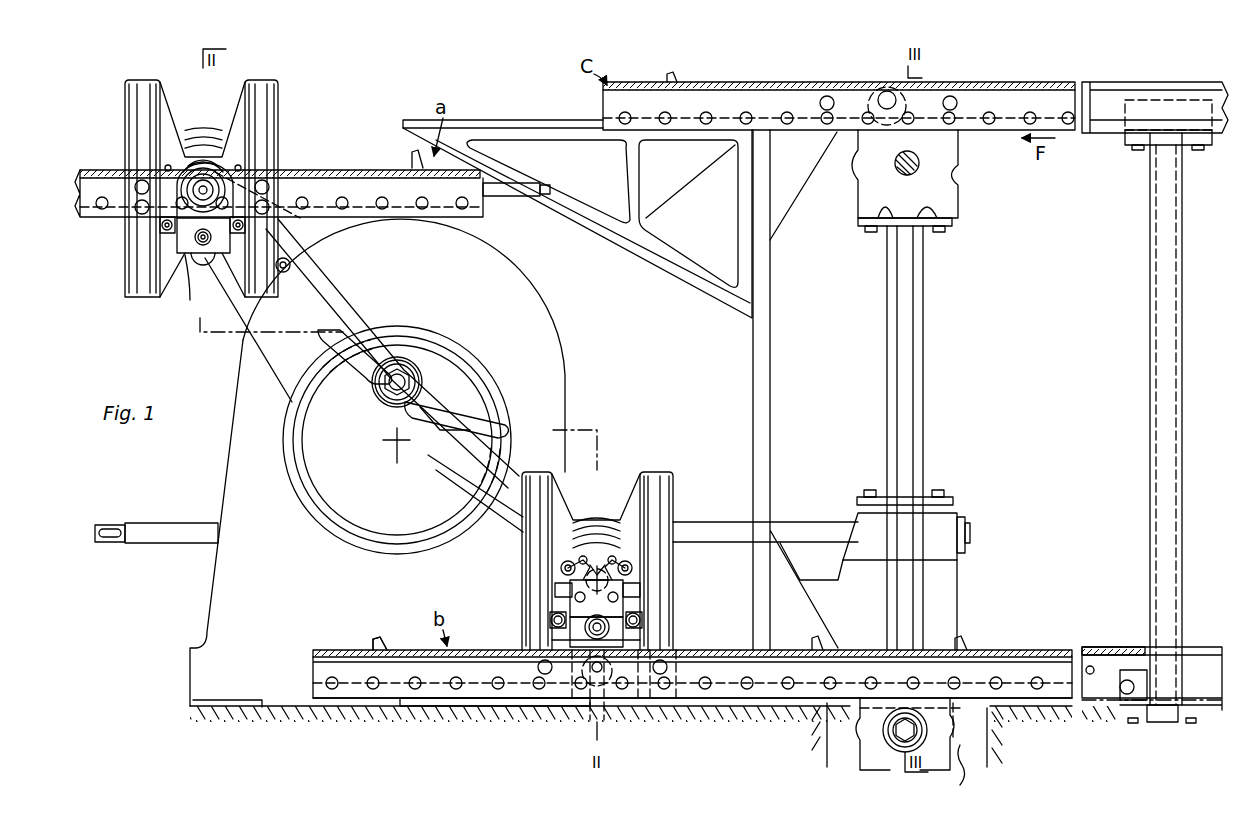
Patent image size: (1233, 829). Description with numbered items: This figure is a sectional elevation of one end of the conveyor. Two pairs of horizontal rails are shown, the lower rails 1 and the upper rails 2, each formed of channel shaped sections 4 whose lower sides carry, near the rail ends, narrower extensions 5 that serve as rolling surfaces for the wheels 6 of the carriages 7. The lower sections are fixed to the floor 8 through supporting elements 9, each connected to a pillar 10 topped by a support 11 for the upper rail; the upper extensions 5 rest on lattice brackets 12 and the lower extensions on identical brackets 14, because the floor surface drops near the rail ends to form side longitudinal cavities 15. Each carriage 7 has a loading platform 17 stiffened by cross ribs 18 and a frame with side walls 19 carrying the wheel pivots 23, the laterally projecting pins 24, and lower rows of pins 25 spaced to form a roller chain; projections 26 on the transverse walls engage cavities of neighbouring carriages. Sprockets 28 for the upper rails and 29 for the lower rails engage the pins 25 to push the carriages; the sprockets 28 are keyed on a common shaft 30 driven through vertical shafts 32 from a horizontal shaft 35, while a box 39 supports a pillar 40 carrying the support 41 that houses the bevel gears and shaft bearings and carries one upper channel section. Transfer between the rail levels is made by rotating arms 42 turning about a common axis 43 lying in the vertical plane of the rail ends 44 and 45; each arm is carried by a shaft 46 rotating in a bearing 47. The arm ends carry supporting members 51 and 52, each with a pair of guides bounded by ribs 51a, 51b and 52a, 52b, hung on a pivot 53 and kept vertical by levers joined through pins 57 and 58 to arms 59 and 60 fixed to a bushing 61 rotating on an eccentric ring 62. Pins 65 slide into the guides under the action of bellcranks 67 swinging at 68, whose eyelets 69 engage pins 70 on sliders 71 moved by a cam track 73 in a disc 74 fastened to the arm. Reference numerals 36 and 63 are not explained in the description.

The lower rails 1 is at (1197, 647).
The upper rails 2 is at (1137, 82).
The channel shaped section 4 is at (843, 121).
The extension 5 is at (555, 123).
The wheel 6 is at (582, 698).
The carriage 7 is at (353, 160).
The floor 8 is at (297, 705).
The supporting element 9 is at (1212, 706).
The pillar 10 is at (1182, 387).
The support 11 is at (1127, 131).
The lattice bracket 12 is at (653, 233).
The bracket 14 is at (433, 703).
The side longitudinal cavity 15 is at (980, 730).
The upper loading platform 17 is at (387, 169).
The cross rib 18 is at (413, 150).
The side wall 19 is at (415, 213).
The pivot 23 is at (887, 96).
The pin 24 is at (827, 96).
The pin 25 is at (380, 208).
The projection 26 is at (531, 198).
The sprocket 28 is at (957, 153).
The sprocket 29 is at (860, 753).
The common shaft 30 is at (918, 167).
The vertical shaft 32 is at (898, 330).
The horizontal shaft 35 is at (167, 530).
The bearing housing 36 is at (957, 747).
The box 39 is at (947, 513).
The pillar 40 is at (924, 360).
The support 41 is at (952, 211).
The rotating arm 42 is at (342, 292).
The common axis 43 is at (420, 367).
The rail end 44 is at (385, 660).
The rail end 45 is at (400, 122).
The shaft 46 is at (421, 380).
The bearing 47 is at (567, 428).
The supporting member 51 is at (140, 120).
The rib 51a is at (125, 96).
The rib 51b is at (152, 80).
The supporting member 52 is at (565, 495).
The rib 52a is at (653, 487).
The rib 52b is at (547, 512).
The pivot 53 is at (205, 170).
The pin 57 is at (192, 256).
The pin 58 is at (586, 627).
The arm 59 is at (228, 300).
The arm 60 is at (480, 490).
The bushing 61 is at (500, 407).
The ring 62 is at (480, 382).
The wheel axis 63 is at (390, 441).
The pin 65 is at (160, 221).
The bellcrank 67 is at (173, 165).
The swinging point 68 is at (566, 569).
The eyelet 69 is at (581, 557).
The pin 70 is at (597, 520).
The slider 71 is at (202, 258).
The cam track 73 is at (190, 143).
The disc 74 is at (217, 131).